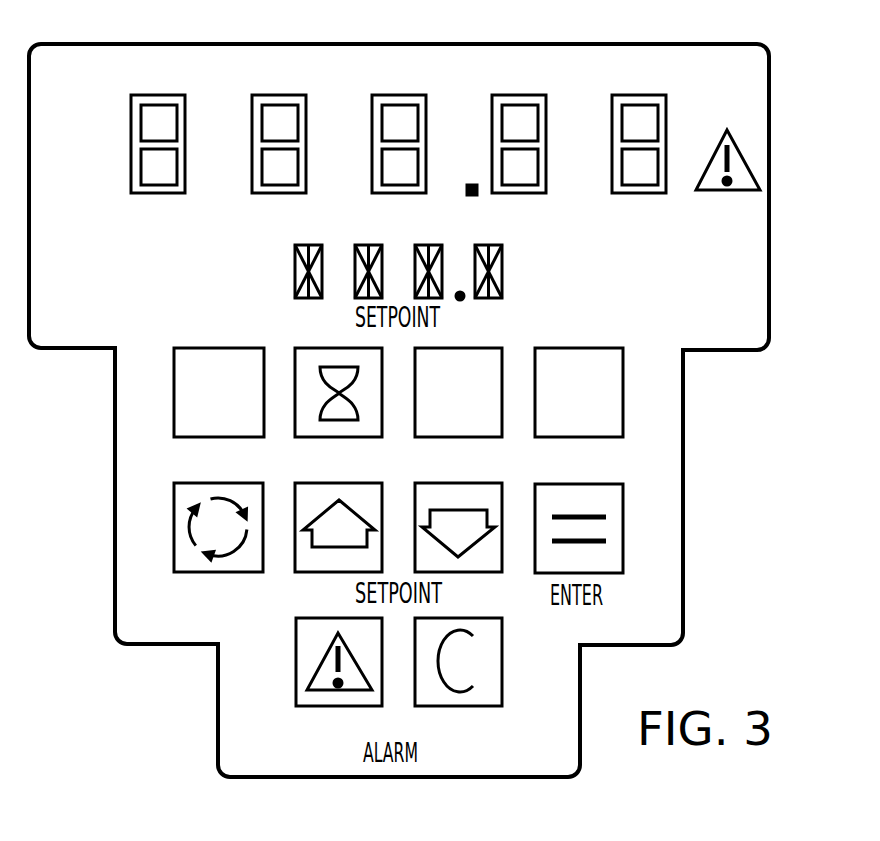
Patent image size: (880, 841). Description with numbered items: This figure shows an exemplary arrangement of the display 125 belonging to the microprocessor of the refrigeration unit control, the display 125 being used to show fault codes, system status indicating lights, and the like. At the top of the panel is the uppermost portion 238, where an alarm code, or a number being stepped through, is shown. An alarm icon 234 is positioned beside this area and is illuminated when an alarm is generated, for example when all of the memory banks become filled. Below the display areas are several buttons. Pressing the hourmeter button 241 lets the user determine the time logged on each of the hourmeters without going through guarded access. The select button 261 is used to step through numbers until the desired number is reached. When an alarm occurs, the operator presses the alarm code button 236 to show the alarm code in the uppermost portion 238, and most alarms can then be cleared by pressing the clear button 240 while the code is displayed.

The display 125 is at (442, 31).
The uppermost portion of display 238 is at (633, 63).
The alarm icon 234 is at (745, 155).
The hourmeter button 241 is at (330, 348).
The select button 261 is at (174, 517).
The alarm code button 236 is at (296, 672).
The clear button 240 is at (502, 651).